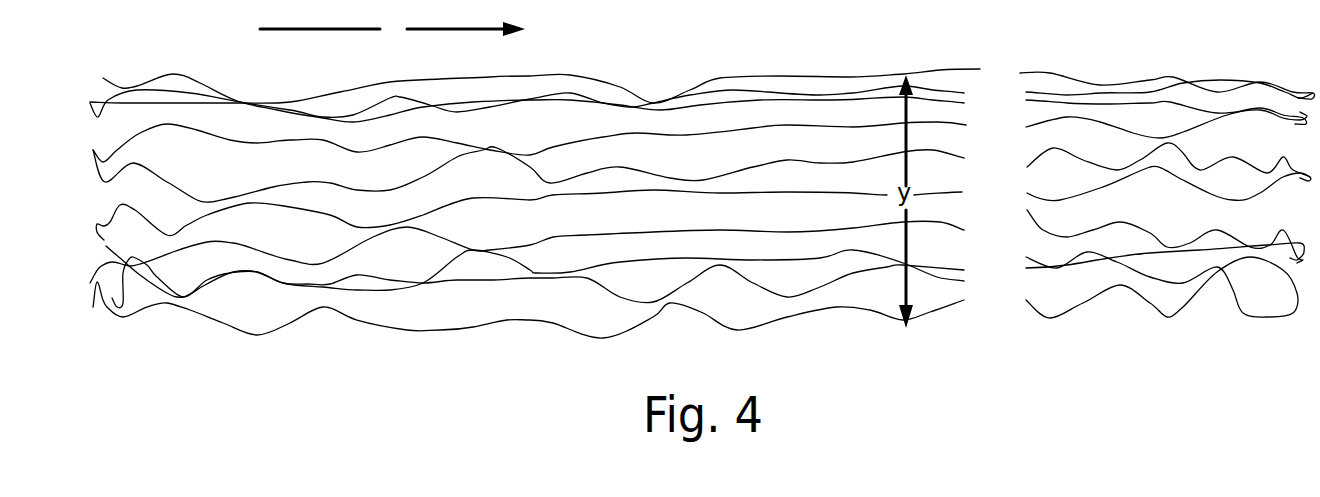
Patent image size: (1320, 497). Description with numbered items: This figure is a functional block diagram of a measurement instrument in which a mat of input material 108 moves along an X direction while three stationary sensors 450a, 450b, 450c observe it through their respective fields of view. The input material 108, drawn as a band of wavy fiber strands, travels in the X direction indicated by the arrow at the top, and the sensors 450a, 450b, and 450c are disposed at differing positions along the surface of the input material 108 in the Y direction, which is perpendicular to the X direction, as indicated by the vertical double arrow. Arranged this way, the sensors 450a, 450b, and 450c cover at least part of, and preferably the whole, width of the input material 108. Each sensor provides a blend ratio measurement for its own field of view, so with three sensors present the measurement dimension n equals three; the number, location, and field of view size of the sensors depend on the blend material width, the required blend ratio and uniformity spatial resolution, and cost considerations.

The input material 108 is at (367, 31).
The first sensor 450a is at (702, 102).
The second sensor 450b is at (702, 185).
The third sensor 450c is at (697, 279).